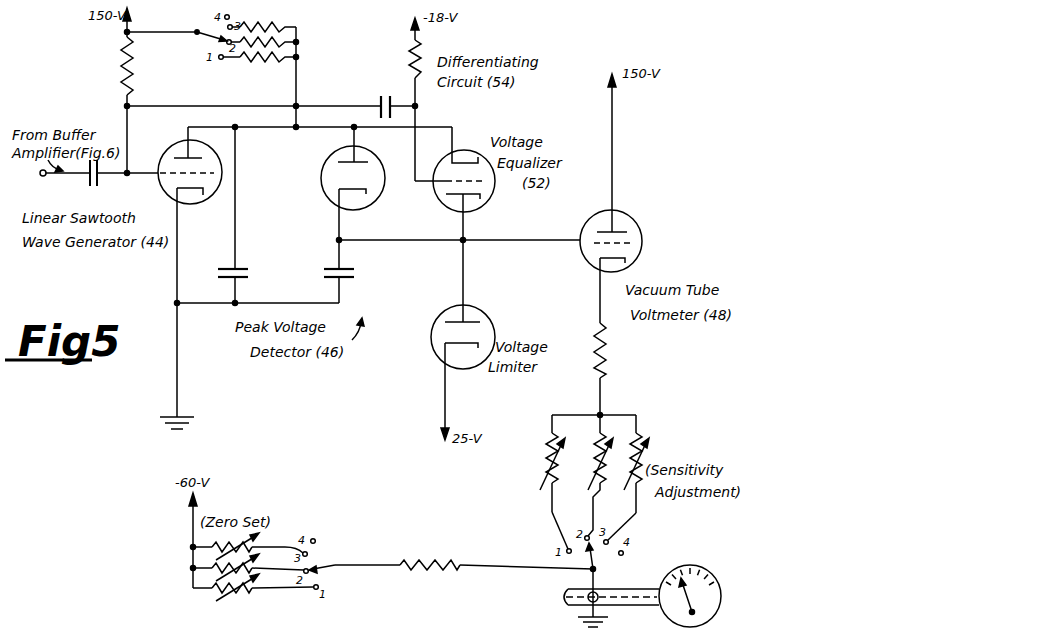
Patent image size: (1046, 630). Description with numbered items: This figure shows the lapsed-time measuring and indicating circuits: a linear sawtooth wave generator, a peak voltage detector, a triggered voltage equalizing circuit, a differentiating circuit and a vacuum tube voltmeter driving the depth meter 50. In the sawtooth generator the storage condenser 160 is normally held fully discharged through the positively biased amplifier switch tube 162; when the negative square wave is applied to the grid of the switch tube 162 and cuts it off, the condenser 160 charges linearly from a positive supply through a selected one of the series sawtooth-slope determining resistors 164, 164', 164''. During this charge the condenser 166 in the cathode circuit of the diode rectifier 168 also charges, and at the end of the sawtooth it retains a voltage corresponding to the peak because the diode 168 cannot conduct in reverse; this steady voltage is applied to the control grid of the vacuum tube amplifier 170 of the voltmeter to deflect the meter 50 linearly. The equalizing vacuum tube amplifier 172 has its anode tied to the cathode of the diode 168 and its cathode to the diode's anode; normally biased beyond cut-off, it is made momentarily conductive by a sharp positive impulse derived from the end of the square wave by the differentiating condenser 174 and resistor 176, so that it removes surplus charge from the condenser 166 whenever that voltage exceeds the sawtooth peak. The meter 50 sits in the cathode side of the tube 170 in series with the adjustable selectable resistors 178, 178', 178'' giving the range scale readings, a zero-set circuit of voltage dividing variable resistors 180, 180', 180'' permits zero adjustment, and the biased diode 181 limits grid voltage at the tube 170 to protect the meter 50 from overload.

The depth meter 50 is at (703, 572).
The storage condenser 160 is at (248, 270).
The amplifier switch tube 162 is at (186, 204).
The sawtooth-slope determining resistor 164 is at (259, 68).
The sawtooth-slope determining resistor 164' is at (285, 38).
The sawtooth-slope determining resistor 164'' is at (277, 21).
The condenser 166 is at (354, 270).
The diode rectifier 168 is at (362, 207).
The vacuum tube amplifier 170 is at (640, 222).
The vacuum tube amplifier 172 is at (488, 205).
The differentiating condenser 174 is at (378, 101).
The resistor 176 is at (419, 47).
The selectable resistor 178 is at (536, 482).
The selectable resistor 178' is at (584, 475).
The selectable resistor 178'' is at (624, 477).
The voltage dividing variable resistor 180 is at (253, 594).
The voltage dividing variable resistor 180' is at (222, 569).
The voltage dividing variable resistor 180'' is at (221, 548).
The biased diode 181 is at (482, 312).